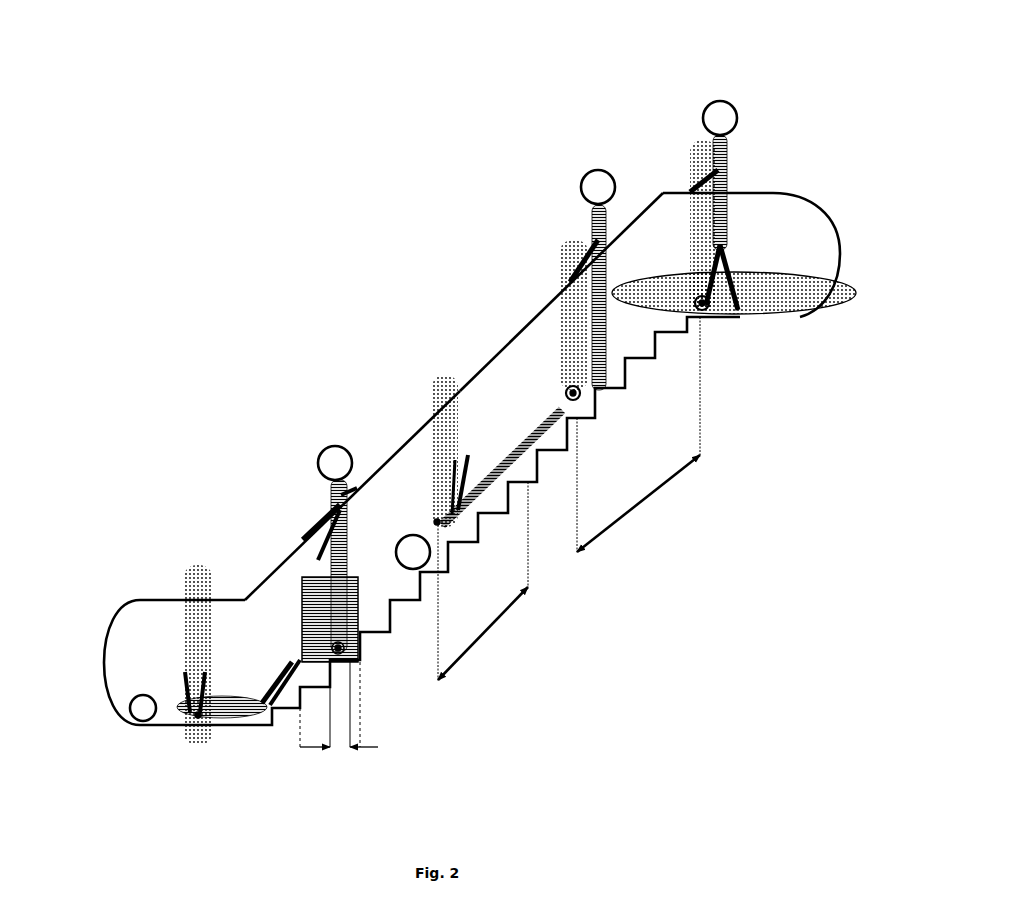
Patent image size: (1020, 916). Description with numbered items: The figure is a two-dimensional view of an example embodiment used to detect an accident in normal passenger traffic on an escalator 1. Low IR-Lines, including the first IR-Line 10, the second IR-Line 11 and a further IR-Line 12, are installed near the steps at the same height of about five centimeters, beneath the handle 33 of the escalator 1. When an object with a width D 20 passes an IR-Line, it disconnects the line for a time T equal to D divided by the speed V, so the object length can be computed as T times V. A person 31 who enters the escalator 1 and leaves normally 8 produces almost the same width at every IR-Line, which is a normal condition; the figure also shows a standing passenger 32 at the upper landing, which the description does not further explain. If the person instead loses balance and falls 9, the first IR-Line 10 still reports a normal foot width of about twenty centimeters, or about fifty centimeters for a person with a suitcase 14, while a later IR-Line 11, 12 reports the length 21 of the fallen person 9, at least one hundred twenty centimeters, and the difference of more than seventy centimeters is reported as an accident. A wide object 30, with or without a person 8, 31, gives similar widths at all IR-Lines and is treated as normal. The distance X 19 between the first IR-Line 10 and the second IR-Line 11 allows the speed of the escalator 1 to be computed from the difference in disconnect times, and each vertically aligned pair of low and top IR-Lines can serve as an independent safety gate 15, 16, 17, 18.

The escalator 1 is at (828, 210).
The person leaving normally 8 is at (320, 440).
The fallen person 9 is at (112, 708).
The first IR-Line 10 is at (708, 320).
The second IR-Line 11 is at (590, 410).
The IR-Line 12 is at (435, 520).
The person with a suitcase 14 is at (300, 577).
The safety gate 15 is at (183, 568).
The safety gate 16 is at (318, 510).
The safety gate 17 is at (427, 387).
The safety gate 18 is at (558, 312).
The distance X 19 is at (650, 500).
The width D 20 is at (368, 755).
The length of fallen person 21 is at (478, 655).
The wide object 30 is at (783, 293).
The person entering escalator 31 is at (727, 95).
The upper user 32 is at (683, 155).
The handle 33 is at (485, 355).